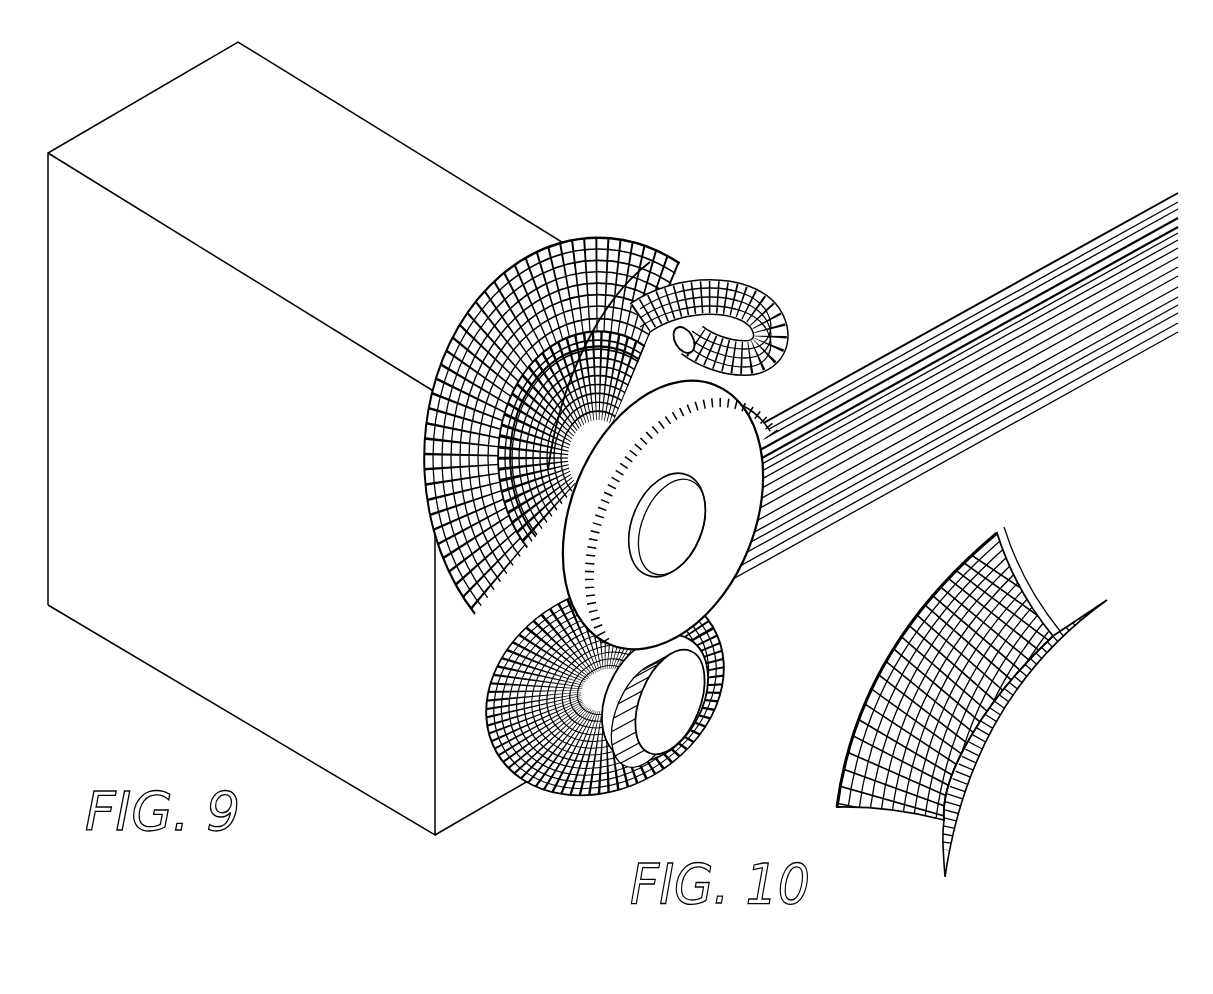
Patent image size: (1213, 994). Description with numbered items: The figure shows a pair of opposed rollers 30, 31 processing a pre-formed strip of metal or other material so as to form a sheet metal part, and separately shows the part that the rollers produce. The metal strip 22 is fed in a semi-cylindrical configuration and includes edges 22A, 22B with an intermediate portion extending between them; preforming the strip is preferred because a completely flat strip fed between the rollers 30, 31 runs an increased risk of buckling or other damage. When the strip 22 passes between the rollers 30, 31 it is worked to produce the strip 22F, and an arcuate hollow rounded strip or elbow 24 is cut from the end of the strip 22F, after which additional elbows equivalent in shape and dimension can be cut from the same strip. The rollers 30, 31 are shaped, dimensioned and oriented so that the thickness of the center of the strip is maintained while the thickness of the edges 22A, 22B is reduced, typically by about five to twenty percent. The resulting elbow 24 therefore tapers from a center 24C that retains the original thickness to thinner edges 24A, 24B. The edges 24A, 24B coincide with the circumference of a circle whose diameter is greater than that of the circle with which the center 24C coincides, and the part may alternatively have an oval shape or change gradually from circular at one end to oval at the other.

In FIG. 9, the metal strip 22 is at (939, 395).
In FIG. 9, the edge of strip 22A is at (1020, 420).
In FIG. 9, the edge of strip 22B is at (924, 341).
In FIG. 9, the strip 22F is at (413, 509).
In FIG. 9, the elbow 24 is at (620, 412).
In FIG. 10, the elbow 24 is at (983, 701).
In FIG. 9, the edge of elbow 24A is at (775, 333).
In FIG. 9, the edge of elbow 24B is at (604, 229).
In FIG. 9, the center of elbow 24C is at (497, 320).
In FIG. 10, the center of elbow 24C is at (1030, 603).
In FIG. 9, the roller 30 is at (631, 795).
In FIG. 9, the roller 31 is at (712, 442).